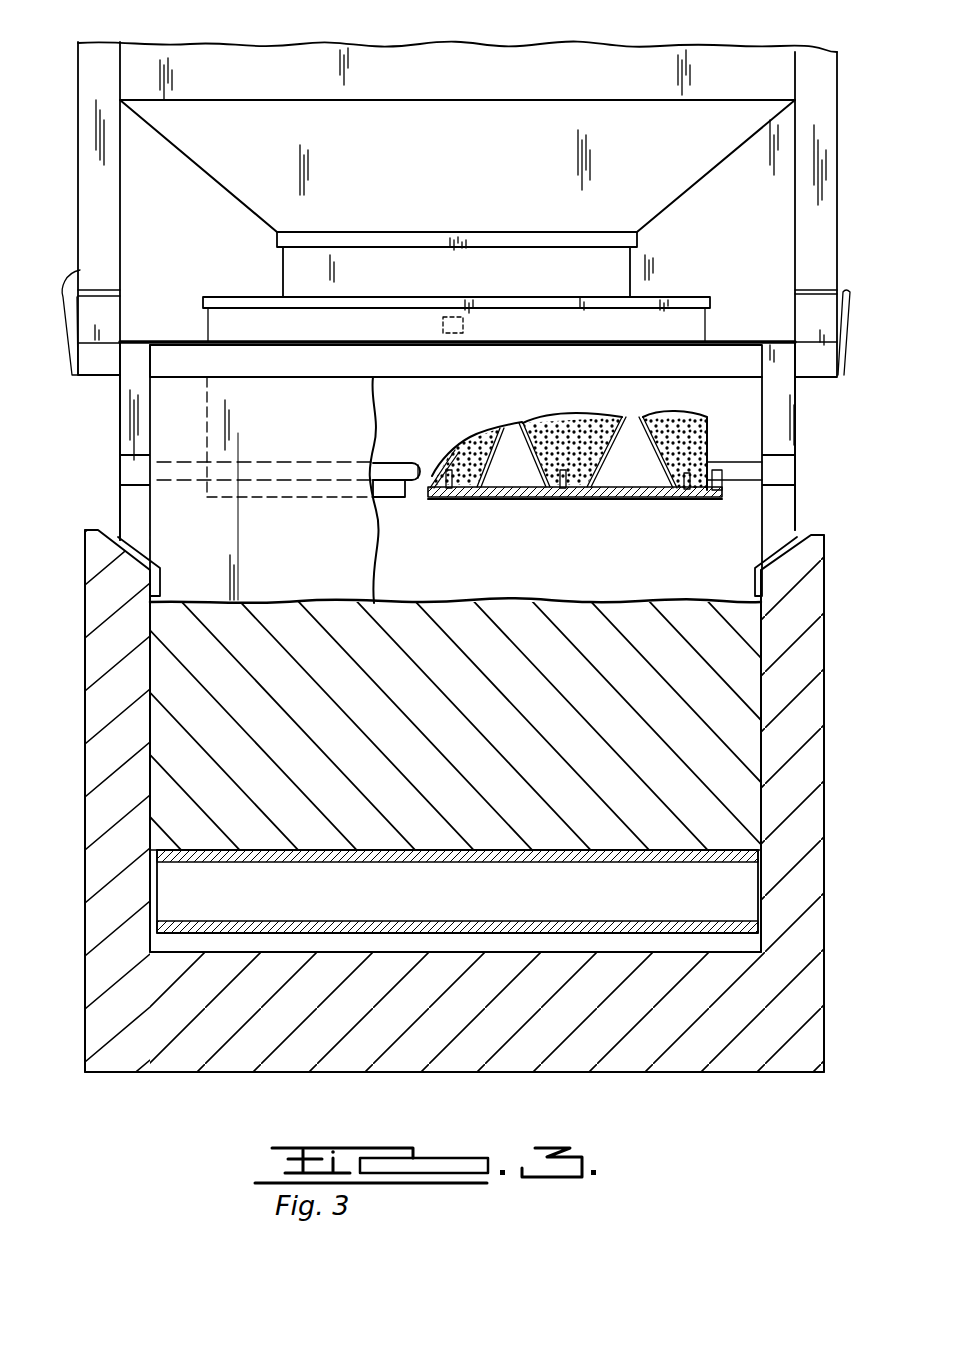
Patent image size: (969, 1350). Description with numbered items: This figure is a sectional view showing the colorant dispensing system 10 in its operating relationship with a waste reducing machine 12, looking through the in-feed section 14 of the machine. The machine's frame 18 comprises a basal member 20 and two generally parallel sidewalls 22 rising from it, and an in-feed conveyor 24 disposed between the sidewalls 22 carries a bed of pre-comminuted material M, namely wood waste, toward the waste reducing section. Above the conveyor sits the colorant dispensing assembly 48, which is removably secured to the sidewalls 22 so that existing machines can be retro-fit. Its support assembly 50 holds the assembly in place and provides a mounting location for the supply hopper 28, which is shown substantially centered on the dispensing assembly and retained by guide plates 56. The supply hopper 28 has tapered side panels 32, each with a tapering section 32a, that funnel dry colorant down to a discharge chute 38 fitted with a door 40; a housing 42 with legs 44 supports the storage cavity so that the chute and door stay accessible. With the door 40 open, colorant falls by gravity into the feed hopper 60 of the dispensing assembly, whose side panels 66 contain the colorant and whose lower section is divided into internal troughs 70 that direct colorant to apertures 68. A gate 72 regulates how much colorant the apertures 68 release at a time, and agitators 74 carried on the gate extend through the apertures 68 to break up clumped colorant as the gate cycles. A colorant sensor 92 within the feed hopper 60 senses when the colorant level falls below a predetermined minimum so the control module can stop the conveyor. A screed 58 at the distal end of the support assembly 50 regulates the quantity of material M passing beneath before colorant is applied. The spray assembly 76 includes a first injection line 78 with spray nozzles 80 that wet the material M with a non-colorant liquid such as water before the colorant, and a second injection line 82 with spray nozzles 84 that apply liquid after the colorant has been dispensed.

The colorant dispensing system 10 is at (185, 1135).
The waste reducing machine 12 is at (135, 1103).
The in-feed section 14 is at (73, 630).
The frame 18 is at (68, 1075).
The basal member 20 is at (376, 1040).
The sidewalls 22 is at (85, 726).
The in-feed conveyor 24 is at (213, 905).
The supply hopper 28 is at (73, 83).
The side panels 32 is at (172, 58).
The hopper sloped bottom walls 32a is at (243, 160).
The discharge chute 38 is at (399, 268).
The door 40 is at (338, 234).
The housing 42 is at (70, 232).
The legs 44 is at (103, 217).
The colorant dispensing assembly 48 is at (98, 433).
The support assembly 50 is at (806, 443).
The guide plates 56 is at (80, 270).
The screed 58 is at (175, 525).
The feed hopper 60 is at (217, 323).
The side panels 66 is at (687, 390).
The apertures 68 is at (455, 498).
The internal troughs 70 is at (556, 436).
The gate 72 is at (710, 503).
The agitators 74 is at (488, 464).
The spray assembly 76 is at (412, 456).
The first injection line 78 is at (383, 462).
The spray nozzles 80 is at (398, 497).
The second injection line 82 is at (739, 472).
The spray nozzles 84 is at (740, 482).
The colorant sensor 92 is at (470, 318).
The pre-comminuted material M is at (320, 612).